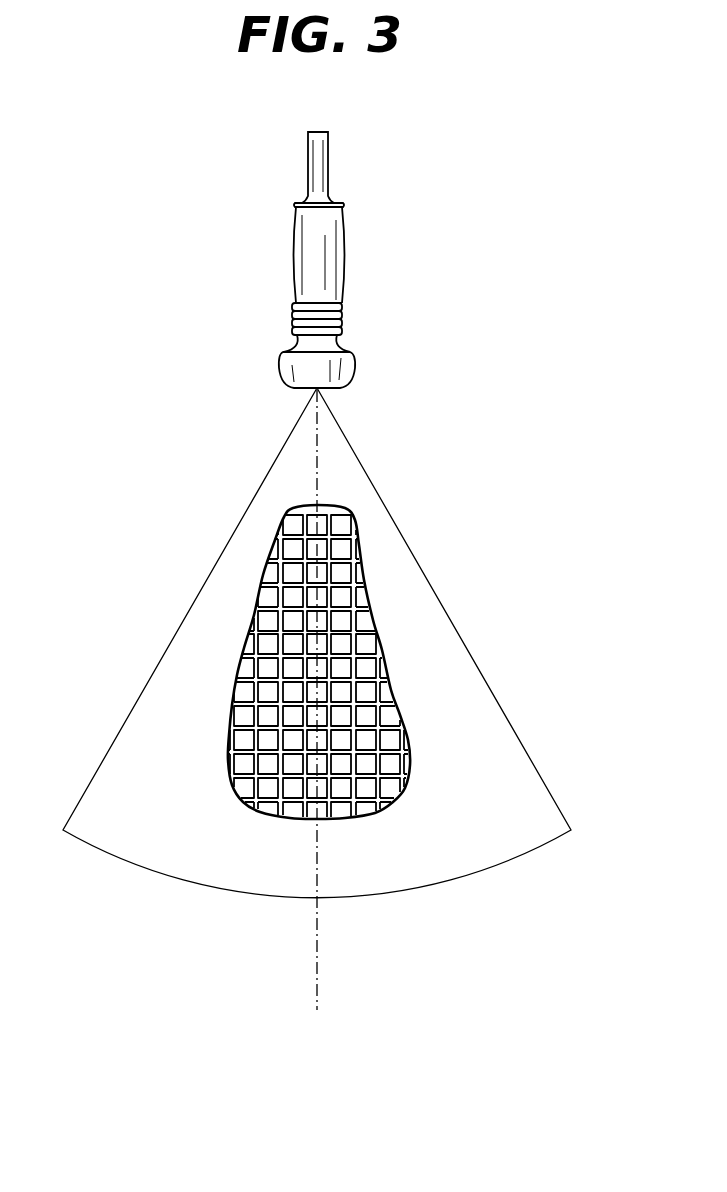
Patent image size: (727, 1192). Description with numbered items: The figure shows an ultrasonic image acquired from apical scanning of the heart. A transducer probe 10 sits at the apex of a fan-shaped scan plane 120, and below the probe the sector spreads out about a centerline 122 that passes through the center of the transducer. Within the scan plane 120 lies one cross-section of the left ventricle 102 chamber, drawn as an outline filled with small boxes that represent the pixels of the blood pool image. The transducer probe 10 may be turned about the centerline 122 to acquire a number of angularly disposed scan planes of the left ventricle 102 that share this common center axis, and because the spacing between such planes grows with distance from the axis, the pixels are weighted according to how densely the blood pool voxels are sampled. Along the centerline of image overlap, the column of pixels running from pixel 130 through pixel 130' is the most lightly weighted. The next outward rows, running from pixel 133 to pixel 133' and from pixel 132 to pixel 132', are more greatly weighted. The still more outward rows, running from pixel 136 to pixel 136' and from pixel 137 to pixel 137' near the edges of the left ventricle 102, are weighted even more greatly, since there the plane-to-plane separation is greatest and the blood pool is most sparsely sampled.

The transducer probe 10 is at (305, 258).
The scan plane 120 is at (524, 748).
The centerline 122 is at (315, 950).
The left ventricle 102 is at (412, 768).
The pixel 130 is at (335, 501).
The pixel 133 is at (294, 504).
The pixel 132 is at (372, 546).
The pixel 136 is at (212, 660).
The pixel 137 is at (412, 658).
The pixel 136' is at (206, 812).
The pixel 137' is at (430, 807).
The pixel 133' is at (270, 843).
The pixel 130' is at (340, 843).
The pixel 132' is at (388, 838).